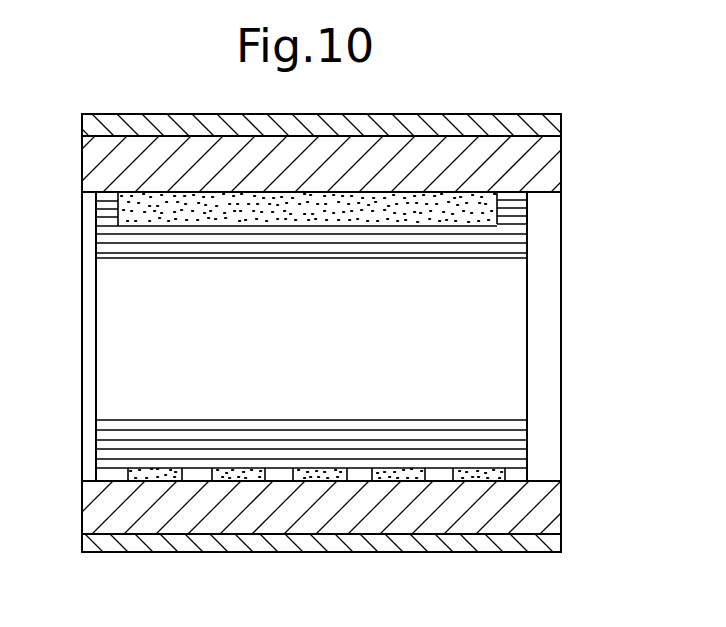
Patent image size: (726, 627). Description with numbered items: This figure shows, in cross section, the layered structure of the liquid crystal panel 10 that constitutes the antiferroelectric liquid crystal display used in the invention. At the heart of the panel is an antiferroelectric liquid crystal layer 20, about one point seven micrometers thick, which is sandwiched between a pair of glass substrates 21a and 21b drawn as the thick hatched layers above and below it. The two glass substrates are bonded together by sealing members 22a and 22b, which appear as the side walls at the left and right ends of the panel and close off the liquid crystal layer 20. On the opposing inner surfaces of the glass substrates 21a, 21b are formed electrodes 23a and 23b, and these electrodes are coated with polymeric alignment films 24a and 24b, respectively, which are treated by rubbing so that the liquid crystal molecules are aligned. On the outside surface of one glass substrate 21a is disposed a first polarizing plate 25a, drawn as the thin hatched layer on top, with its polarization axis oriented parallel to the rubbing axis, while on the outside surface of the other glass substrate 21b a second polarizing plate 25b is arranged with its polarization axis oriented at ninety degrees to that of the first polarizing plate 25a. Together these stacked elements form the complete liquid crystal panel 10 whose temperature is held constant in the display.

The liquid crystal panel 10 is at (420, 113).
The antiferroelectric liquid crystal layer 20 is at (318, 333).
The glass substrate 21a is at (553, 180).
The glass substrate 21b is at (90, 520).
The sealing member 22a is at (88, 305).
The sealing member 22b is at (550, 313).
The electrode 23a is at (118, 228).
The electrode 23b is at (128, 476).
The polymeric alignment film 24a is at (510, 218).
The polymeric alignment film 24b is at (512, 443).
The first polarizing plate 25a is at (548, 121).
The second polarizing plate 25b is at (553, 545).